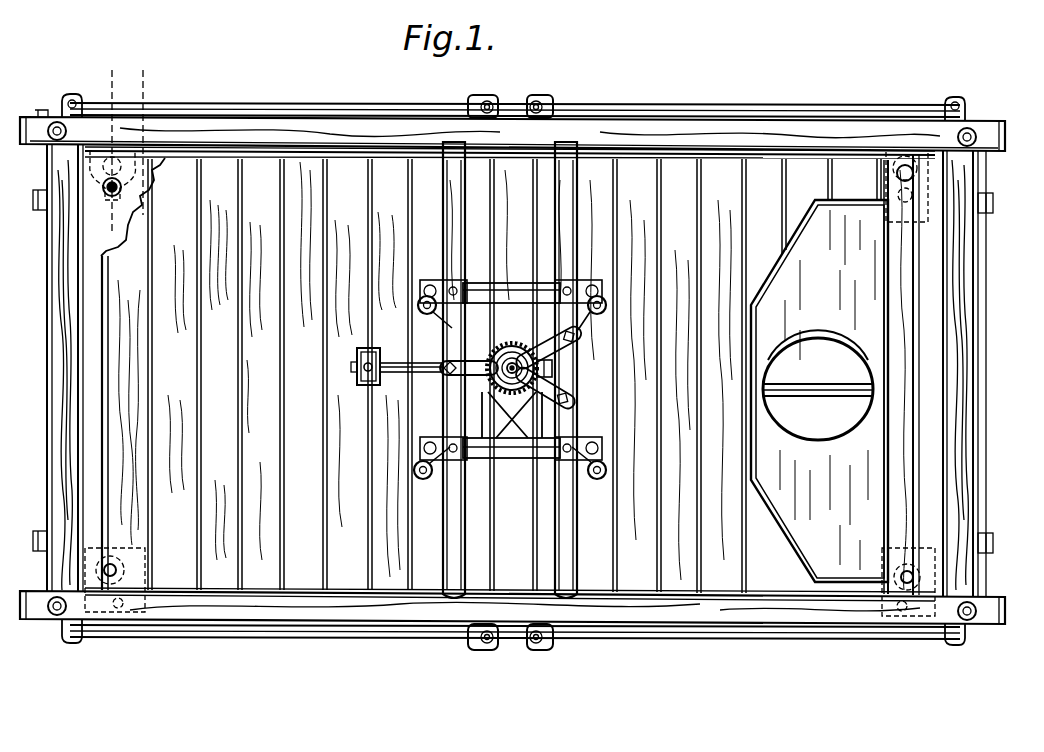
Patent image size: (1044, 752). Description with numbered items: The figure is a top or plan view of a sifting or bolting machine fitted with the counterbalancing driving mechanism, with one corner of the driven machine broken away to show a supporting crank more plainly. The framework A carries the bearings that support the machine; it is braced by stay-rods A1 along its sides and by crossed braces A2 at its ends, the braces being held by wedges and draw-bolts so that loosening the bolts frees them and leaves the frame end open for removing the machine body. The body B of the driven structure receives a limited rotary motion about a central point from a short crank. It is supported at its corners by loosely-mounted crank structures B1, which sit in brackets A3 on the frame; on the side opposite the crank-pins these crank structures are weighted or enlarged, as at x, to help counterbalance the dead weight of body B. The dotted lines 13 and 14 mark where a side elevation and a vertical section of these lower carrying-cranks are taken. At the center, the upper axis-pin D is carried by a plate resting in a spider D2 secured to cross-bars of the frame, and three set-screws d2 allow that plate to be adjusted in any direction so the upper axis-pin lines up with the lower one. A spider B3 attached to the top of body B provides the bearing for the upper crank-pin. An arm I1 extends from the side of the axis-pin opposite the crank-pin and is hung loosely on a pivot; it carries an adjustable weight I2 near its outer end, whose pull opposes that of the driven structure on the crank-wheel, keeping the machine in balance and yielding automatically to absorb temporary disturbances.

The framework A is at (352, 120).
The stay-rods A1 is at (230, 84).
The crossed braces A2 is at (226, 664).
The brackets A3 is at (1000, 582).
The body of the driven structure B is at (185, 374).
The crank structures B1 is at (150, 192).
The spider B3 is at (620, 330).
The upper axis-pin D is at (510, 370).
The spider D2 is at (590, 414).
The set-screws d2 is at (495, 340).
The arm I1 is at (420, 375).
The weight I2 is at (364, 386).
The section line 13 13 is at (156, 67).
The section line 14 14 is at (122, 67).
The weighted portion of crank structure x is at (135, 152).